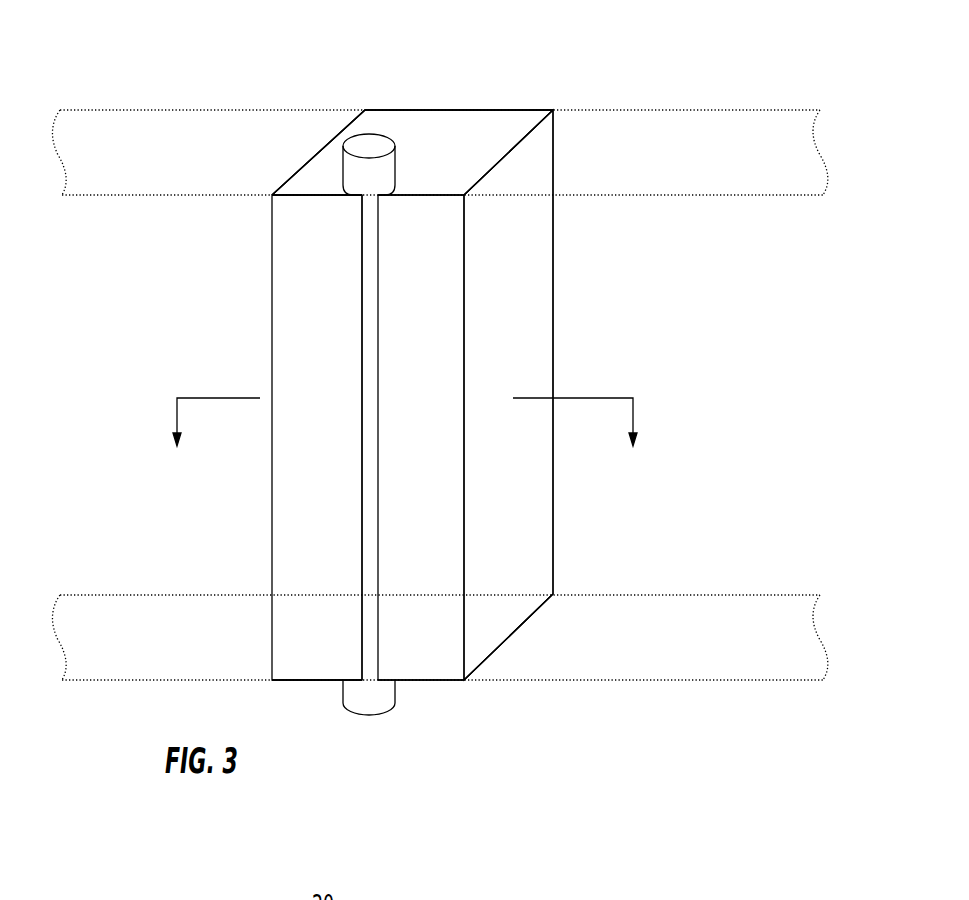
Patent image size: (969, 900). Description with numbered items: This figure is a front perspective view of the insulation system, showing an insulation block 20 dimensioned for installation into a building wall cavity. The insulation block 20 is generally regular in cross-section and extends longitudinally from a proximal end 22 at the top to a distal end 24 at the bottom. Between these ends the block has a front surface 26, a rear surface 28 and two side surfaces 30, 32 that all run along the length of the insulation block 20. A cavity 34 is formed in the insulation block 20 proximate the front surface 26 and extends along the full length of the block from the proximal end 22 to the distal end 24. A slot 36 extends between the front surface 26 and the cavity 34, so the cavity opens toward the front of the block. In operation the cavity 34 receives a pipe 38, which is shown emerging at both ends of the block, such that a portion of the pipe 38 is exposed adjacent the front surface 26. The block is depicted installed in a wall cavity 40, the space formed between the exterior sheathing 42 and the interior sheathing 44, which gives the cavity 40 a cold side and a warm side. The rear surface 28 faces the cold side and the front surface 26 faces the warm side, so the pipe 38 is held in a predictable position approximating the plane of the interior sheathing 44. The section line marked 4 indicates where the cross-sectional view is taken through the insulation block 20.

The insulation block 20 is at (517, 87).
The proximal end 22 is at (452, 125).
The distal end 24 is at (428, 681).
The front surface 26 is at (317, 437).
The rear surface 28 is at (390, 109).
The side surface 30 is at (313, 158).
The side surface 32 is at (508, 395).
The cavity 34 is at (395, 190).
The slot 36 is at (378, 488).
The pipe 38 is at (355, 717).
The cavity 40 is at (670, 615).
The exterior sheathing 42 is at (677, 109).
The interior sheathing 44 is at (700, 195).
The section line 4- 4 is at (405, 438).